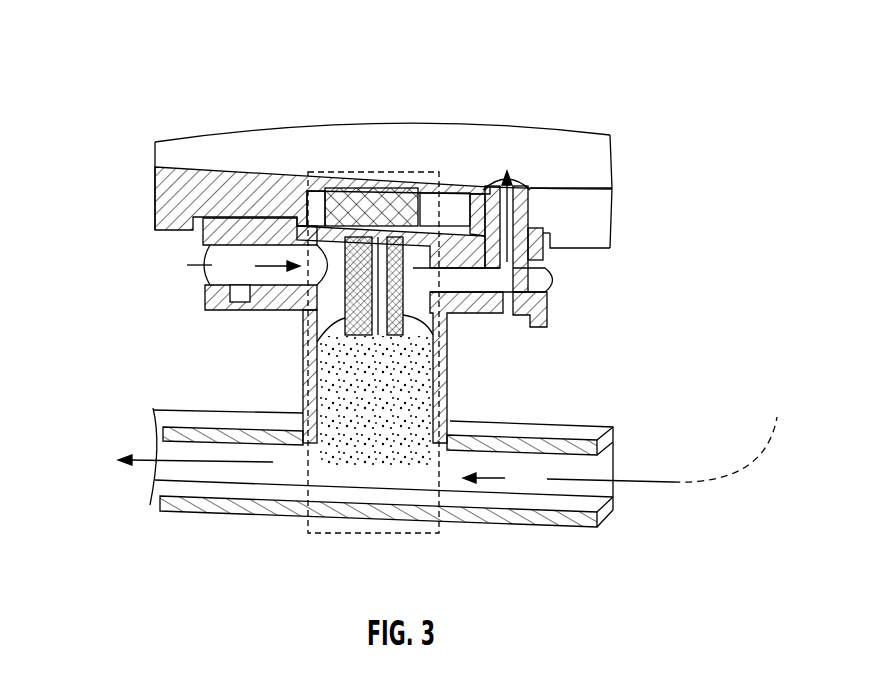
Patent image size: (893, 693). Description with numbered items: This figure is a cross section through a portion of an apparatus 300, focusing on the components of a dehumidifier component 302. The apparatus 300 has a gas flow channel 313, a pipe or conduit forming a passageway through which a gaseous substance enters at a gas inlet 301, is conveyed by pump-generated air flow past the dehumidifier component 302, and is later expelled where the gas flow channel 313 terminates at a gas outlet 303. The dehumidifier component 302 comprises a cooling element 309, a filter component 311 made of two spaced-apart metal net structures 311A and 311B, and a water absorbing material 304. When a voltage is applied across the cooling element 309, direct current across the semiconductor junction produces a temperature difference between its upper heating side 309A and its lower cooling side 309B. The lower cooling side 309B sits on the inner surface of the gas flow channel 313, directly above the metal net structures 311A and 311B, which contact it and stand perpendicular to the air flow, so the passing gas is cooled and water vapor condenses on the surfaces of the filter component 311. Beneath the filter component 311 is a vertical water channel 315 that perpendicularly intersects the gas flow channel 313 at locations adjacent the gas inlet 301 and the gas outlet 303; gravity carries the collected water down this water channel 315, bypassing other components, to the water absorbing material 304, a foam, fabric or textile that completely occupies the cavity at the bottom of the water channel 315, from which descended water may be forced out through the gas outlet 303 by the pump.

The apparatus 300 is at (600, 50).
The gas inlet 301 is at (207, 270).
The dehumidifier component 302 is at (357, 533).
The gas outlet 303 is at (150, 487).
The water absorbing material 304 is at (362, 447).
The cooling element 309 is at (325, 190).
The upper heating side 309A is at (372, 200).
The lower cooling side 309B is at (400, 226).
The filter component 311 is at (377, 299).
The metal net structure 311A is at (345, 330).
The metal net structure 311B is at (440, 336).
The gas flow channel 313 is at (253, 274).
The water channel 315 is at (327, 297).